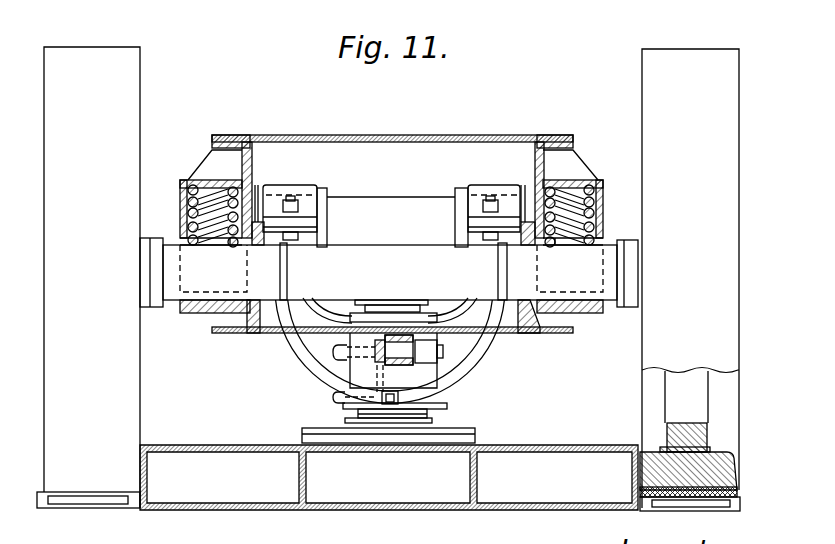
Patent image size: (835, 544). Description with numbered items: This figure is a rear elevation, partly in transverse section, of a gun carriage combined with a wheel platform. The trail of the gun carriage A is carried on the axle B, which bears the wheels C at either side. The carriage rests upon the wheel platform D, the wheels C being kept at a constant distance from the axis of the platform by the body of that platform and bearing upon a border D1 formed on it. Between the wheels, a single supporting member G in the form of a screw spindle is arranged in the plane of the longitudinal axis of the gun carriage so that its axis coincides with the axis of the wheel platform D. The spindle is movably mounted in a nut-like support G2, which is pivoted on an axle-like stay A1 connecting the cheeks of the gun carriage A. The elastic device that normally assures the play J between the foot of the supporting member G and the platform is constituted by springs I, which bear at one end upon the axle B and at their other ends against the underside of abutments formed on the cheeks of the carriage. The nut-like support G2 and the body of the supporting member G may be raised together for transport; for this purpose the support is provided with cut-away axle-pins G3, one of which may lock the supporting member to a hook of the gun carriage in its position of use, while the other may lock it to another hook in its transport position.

The wheels C is at (125, 102).
The trail of a gun carriage A is at (262, 135).
The axle-like stay A1 is at (386, 207).
The springs I is at (200, 213).
The axle B is at (208, 278).
The supporting member G is at (449, 413).
The nut-like support G2 is at (317, 362).
The cut-away axle-pins G3 is at (433, 368).
The play J is at (302, 438).
The wheel platform D is at (570, 458).
The border D1 is at (673, 503).